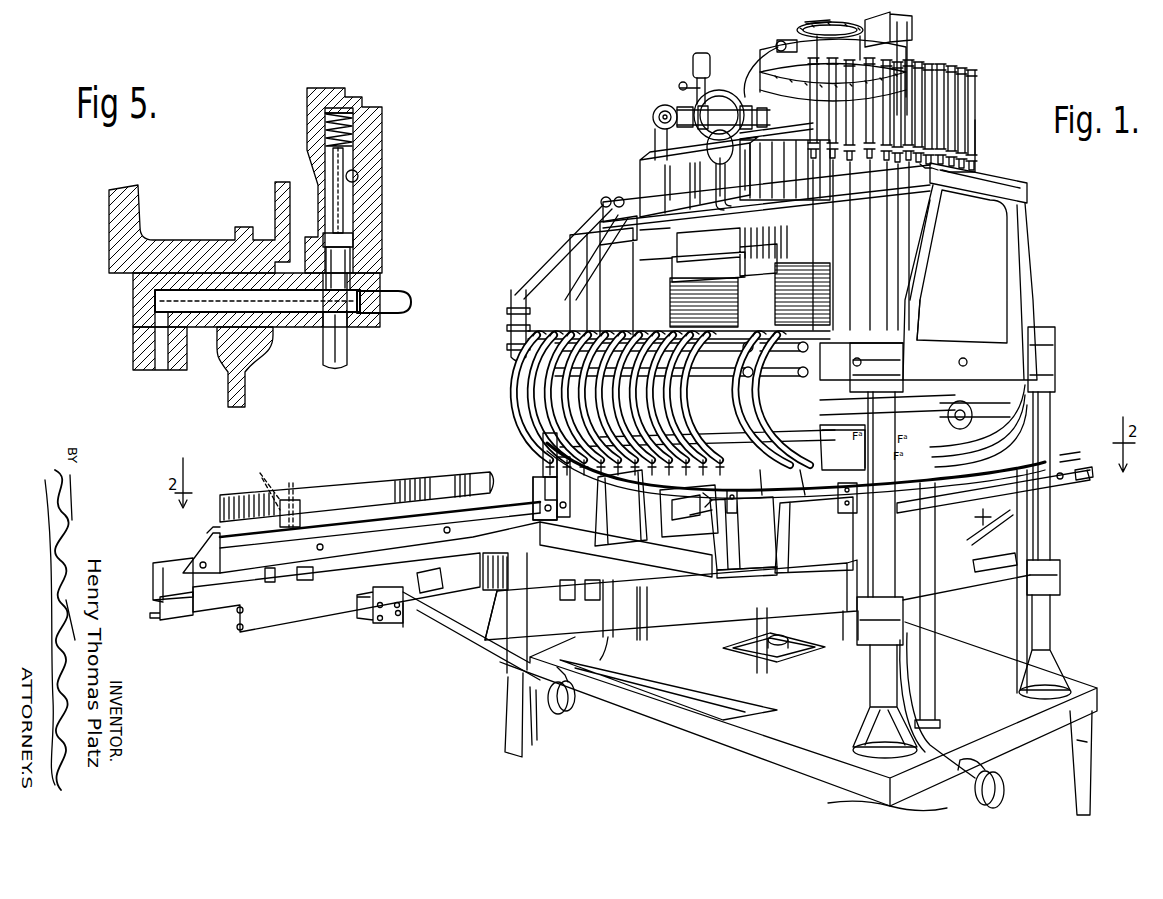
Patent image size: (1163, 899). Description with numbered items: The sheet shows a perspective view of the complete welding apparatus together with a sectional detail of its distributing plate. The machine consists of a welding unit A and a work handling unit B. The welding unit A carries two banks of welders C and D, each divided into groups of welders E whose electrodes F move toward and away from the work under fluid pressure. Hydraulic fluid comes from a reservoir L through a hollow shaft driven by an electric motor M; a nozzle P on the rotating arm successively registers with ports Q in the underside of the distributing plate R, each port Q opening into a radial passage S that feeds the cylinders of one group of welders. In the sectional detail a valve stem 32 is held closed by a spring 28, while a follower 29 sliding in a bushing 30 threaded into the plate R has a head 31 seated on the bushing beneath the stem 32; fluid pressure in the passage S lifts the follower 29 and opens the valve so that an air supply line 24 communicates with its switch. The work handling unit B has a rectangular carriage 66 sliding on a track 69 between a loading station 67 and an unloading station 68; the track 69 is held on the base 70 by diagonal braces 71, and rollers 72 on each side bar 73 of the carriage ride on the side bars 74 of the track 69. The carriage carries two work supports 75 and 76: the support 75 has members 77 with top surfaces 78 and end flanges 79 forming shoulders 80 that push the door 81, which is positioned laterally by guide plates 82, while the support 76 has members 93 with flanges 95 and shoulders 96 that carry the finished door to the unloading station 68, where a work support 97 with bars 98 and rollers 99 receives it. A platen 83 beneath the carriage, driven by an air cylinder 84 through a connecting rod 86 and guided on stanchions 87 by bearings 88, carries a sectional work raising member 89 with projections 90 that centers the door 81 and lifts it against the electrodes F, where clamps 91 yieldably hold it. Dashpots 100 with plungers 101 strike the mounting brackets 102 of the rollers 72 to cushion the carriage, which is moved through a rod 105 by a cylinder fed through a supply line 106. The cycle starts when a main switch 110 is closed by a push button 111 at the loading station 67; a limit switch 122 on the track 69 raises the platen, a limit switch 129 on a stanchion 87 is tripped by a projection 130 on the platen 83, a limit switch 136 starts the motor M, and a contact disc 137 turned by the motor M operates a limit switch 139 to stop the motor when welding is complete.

In FIG. 5, the air supply line 24 is at (358, 180).
In FIG. 5, the spring 28 is at (350, 125).
In FIG. 5, the follower 29 is at (355, 264).
In FIG. 5, the bushing 30 is at (363, 288).
In FIG. 5, the head 31 is at (355, 241).
In FIG. 5, the stem 32 is at (345, 202).
In FIG. 5, the nozzle P is at (137, 356).
In FIG. 5, the ports Q is at (158, 318).
In FIG. 5, the distributing plate R is at (305, 325).
In FIG. 1, the distributing plate R is at (790, 82).
In FIG. 5, the passage S is at (200, 290).
In FIG. 1, the carriage 66 is at (286, 631).
In FIG. 1, the loading station 67 is at (298, 477).
In FIG. 1, the unloading station 68 is at (1079, 459).
In FIG. 1, the track 69 is at (437, 607).
In FIG. 1, the base 70 is at (783, 730).
In FIG. 1, the diagonal braces 71 is at (680, 640).
In FIG. 1, the rollers 72 is at (453, 583).
In FIG. 1, the side bar 73 is at (268, 573).
In FIG. 1, the side bars 74 is at (575, 583).
In FIG. 1, the work support 75 is at (373, 540).
In FIG. 1, the work support 76 is at (712, 545).
In FIG. 1, the members 77 is at (357, 540).
In FIG. 1, the top surfaces 78 is at (495, 492).
In FIG. 1, the flanges 79 is at (538, 495).
In FIG. 1, the shoulders 80 is at (540, 497).
In FIG. 1, the door 81 is at (793, 505).
In FIG. 1, the guide plates 82 is at (357, 483).
In FIG. 1, the platen 83 is at (712, 605).
In FIG. 1, the air cylinder 84 is at (800, 660).
In FIG. 1, the connecting rod 86 is at (780, 636).
In FIG. 1, the stanchions 87 is at (545, 452).
In FIG. 1, the bearings 88 is at (878, 630).
In FIG. 1, the work raising member 89 is at (807, 573).
In FIG. 1, the projections 90 is at (553, 463).
In FIG. 1, the clamps 91 is at (843, 449).
In FIG. 1, the members 93 is at (590, 510).
In FIG. 1, the flanges 95 is at (700, 517).
In FIG. 1, the shoulders 96 is at (703, 499).
In FIG. 1, the work support 97 is at (1085, 480).
In FIG. 1, the bars 98 is at (1087, 470).
In FIG. 1, the rollers 99 is at (1060, 472).
In FIG. 1, the dashpots 100 is at (387, 622).
In FIG. 1, the plungers 101 is at (410, 633).
In FIG. 1, the mounting brackets 102 is at (420, 587).
In FIG. 1, the rod 105 is at (193, 620).
In FIG. 1, the fluid pressure supply line 106 is at (606, 643).
In FIG. 1, the main switch 110 is at (283, 518).
In FIG. 1, the control button 111 is at (268, 484).
In FIG. 1, the limit switch 122 is at (660, 593).
In FIG. 1, the limit switch 129 is at (935, 592).
In FIG. 1, the projection 130 is at (1005, 567).
In FIG. 1, the limit switch 136 is at (1005, 595).
In FIG. 1, the contact disc 137 is at (805, 22).
In FIG. 1, the limit switch 139 is at (912, 27).
In FIG. 1, the welding unit A is at (1026, 413).
In FIG. 1, the work handling unit B is at (455, 470).
In FIG. 1, the bank of welders C is at (985, 455).
In FIG. 1, the bank of welders D is at (743, 530).
In FIG. 1, the groups of welders E is at (808, 500).
In FIG. 1, the electrodes F is at (763, 498).
In FIG. 1, the reservoir L is at (650, 166).
In FIG. 1, the electric motor M is at (747, 97).